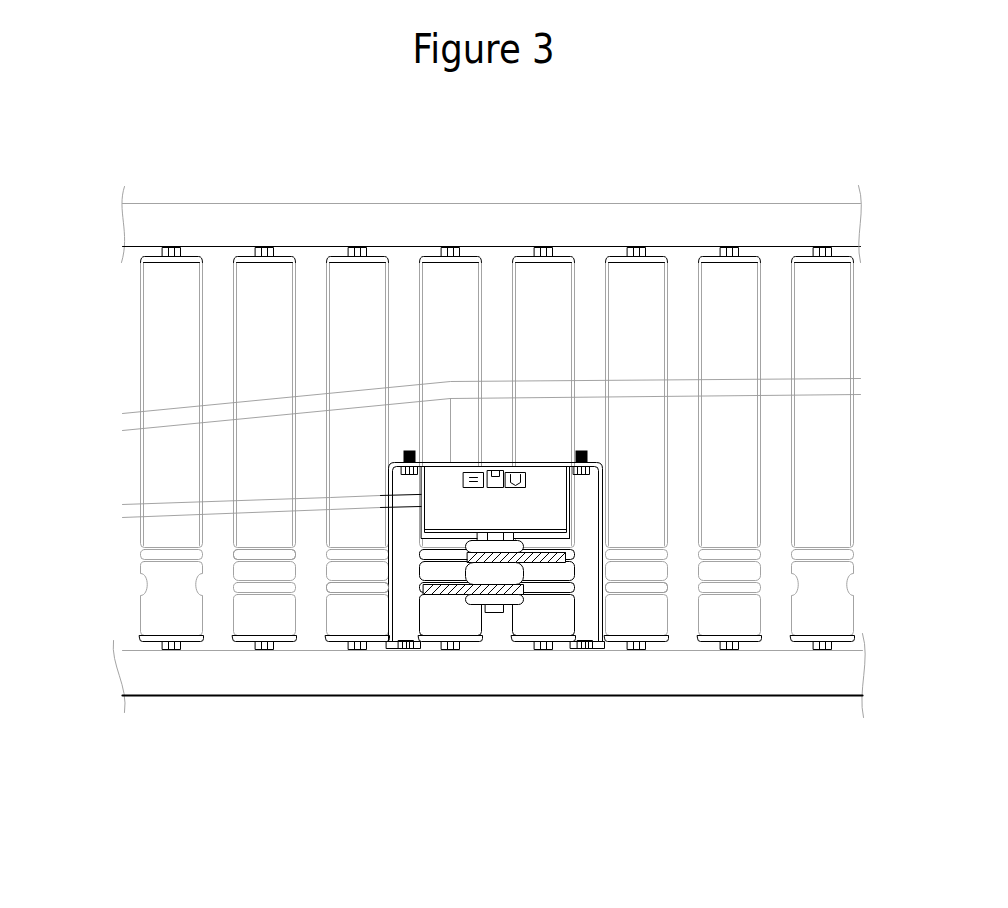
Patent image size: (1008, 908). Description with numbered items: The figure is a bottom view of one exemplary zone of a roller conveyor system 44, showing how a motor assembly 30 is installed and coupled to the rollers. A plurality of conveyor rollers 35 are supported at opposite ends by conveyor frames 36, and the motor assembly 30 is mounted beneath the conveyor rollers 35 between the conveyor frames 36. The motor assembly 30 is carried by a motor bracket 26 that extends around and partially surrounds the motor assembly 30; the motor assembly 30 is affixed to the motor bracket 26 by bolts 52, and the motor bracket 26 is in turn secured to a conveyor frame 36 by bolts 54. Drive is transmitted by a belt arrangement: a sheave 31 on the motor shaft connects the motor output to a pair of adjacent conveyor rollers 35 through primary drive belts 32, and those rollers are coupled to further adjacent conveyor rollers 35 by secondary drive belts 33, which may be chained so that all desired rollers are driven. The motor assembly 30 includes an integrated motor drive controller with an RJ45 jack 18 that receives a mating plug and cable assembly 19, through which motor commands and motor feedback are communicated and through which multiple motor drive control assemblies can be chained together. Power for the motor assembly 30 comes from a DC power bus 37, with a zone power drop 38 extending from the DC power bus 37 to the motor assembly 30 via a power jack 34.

The RJ45 jack 18 is at (475, 479).
The plug and cable assembly 19 is at (307, 504).
The motor bracket 26 is at (600, 546).
The motor assembly 30 is at (567, 559).
The sheave 31 is at (499, 576).
The primary drive belts 32 is at (454, 590).
The secondary drive belts 33 is at (392, 556).
The power jack 34 is at (460, 518).
The conveyor rollers 35 is at (168, 380).
The conveyor frames 36 is at (671, 224).
The DC power bus 37 is at (276, 394).
The zone power drop 38 is at (447, 421).
The roller conveyor system 44 is at (704, 149).
The bolts 52 is at (584, 452).
The bolts 54 is at (584, 640).